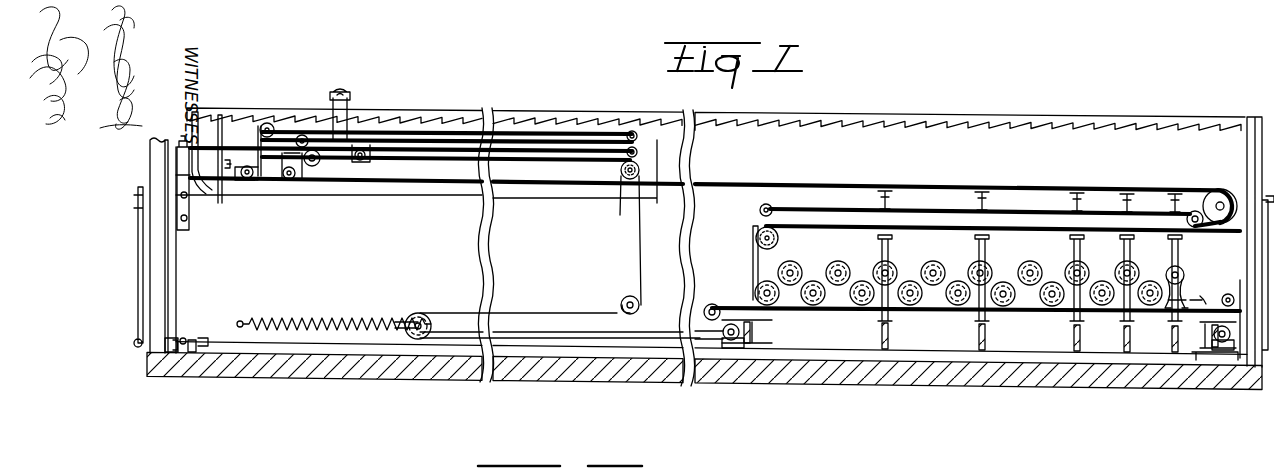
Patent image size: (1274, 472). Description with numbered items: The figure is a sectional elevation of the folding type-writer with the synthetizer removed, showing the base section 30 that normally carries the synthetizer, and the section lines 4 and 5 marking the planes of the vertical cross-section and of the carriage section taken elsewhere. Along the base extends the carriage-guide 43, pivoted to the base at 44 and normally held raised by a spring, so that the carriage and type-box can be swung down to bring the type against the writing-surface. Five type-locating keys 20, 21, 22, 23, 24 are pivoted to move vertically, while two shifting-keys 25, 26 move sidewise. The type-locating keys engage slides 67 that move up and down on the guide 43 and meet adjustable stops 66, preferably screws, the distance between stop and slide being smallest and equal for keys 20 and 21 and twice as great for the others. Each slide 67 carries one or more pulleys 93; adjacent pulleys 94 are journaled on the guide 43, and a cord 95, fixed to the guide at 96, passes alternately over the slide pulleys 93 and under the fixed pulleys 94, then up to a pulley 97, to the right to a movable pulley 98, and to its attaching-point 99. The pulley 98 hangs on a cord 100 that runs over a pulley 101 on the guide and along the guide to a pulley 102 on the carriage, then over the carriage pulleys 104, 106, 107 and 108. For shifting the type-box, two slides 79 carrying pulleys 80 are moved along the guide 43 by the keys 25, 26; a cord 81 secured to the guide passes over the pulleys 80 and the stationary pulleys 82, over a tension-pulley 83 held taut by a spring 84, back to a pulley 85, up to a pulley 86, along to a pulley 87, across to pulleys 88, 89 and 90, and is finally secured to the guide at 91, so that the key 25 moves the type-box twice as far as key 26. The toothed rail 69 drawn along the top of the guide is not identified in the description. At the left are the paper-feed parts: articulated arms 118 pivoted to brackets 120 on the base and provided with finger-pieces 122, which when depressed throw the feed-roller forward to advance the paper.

The section line 4- 4 is at (1033, 110).
The section line 5- 5 is at (340, 86).
The type-locating key 20 is at (1171, 338).
The type-locating key 21 is at (1123, 338).
The type-locating key 22 is at (1073, 338).
The type-locating key 23 is at (978, 337).
The type-locating key 24 is at (889, 337).
The type-box-shifting key 25 is at (728, 374).
The type-box-shifting key 26 is at (1208, 364).
The base section 30 is at (342, 372).
The carriage-guide 43 is at (247, 282).
The pivot 44 is at (204, 344).
The stops 66 is at (1180, 197).
The slides 67 is at (888, 255).
The toothed rail 69 is at (235, 112).
The slides 79 is at (770, 332).
The pulleys 80 is at (722, 332).
The cord 81 is at (522, 302).
The stationary pulleys 82 is at (714, 304).
The tension-pulley 83 is at (418, 312).
The spring 84 is at (320, 322).
The pulley 85 is at (626, 298).
The pulley 86 is at (640, 172).
The pulley 87 is at (378, 140).
The pulley 88 is at (348, 95).
The pulley 89 is at (316, 166).
The pulley 90 is at (294, 135).
The cord attaching point 91 is at (176, 148).
The slide pulleys 93 is at (830, 262).
The fixed pulleys 94 is at (815, 300).
The cord 95 is at (826, 262).
The cord attaching point 96 is at (1205, 302).
The pulley 97 is at (756, 236).
The movable pulley 98 is at (1201, 223).
The cord attaching point 99 is at (765, 204).
The cord 100 is at (540, 133).
The pulley 101 is at (1222, 192).
The pulley 102 is at (291, 180).
The pulley 104 is at (638, 153).
The pulley 106 is at (638, 137).
The pulley 107 is at (262, 128).
The pulley 108 is at (250, 180).
The articulated arms 118 is at (137, 252).
The brackets 120 is at (1250, 150).
The finger-pieces 122 is at (122, 193).